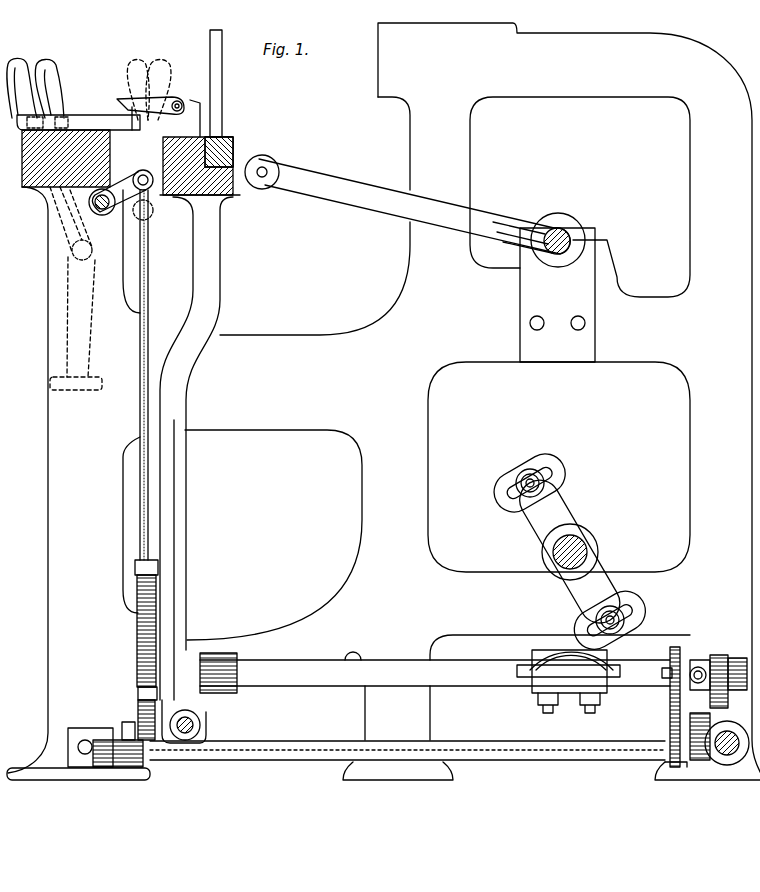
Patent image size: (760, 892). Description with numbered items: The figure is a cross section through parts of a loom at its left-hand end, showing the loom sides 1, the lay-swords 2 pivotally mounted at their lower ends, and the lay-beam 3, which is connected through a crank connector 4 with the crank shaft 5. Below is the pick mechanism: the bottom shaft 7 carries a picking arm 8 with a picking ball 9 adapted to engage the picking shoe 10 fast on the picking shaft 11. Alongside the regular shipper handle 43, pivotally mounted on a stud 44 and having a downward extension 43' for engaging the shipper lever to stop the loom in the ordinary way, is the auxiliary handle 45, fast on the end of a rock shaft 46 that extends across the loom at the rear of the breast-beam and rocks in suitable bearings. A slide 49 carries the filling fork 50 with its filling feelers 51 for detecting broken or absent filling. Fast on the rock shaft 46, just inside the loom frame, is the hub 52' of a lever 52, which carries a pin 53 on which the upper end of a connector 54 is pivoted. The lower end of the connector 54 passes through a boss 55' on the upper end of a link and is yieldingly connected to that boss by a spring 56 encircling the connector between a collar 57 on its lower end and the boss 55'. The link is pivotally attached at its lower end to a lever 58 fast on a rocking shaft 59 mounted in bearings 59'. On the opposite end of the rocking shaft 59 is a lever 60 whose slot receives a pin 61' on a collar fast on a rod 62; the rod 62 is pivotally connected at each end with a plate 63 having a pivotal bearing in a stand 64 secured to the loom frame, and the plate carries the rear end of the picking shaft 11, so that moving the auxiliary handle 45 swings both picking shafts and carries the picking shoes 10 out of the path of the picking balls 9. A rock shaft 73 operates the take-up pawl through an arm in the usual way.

The loom sides 1 is at (63, 515).
The lay-swords 2 is at (208, 308).
The lay-beam 3 is at (207, 167).
The crank connector 4 is at (353, 198).
The crank shaft 5 is at (568, 228).
The bottom shaft 7 is at (585, 543).
The picking arm 8 is at (535, 525).
The picking ball 9 is at (510, 465).
The picking shoe 10 is at (547, 677).
The picking shaft 11 is at (362, 680).
The regular shipper handle 43 is at (41, 73).
The downward extension 43' is at (56, 323).
The stud 44 is at (67, 257).
The auxiliary handle 45 is at (48, 87).
The rock shaft 46 is at (63, 225).
The slide 49 is at (62, 116).
The filling fork 50 is at (192, 98).
The filling feelers 51 is at (200, 130).
The lever 52 is at (87, 175).
The hub 52' is at (61, 219).
The pin 53 is at (147, 183).
The connector 54 is at (143, 317).
The boss 55' is at (119, 584).
The spring 56 is at (137, 623).
The collar 57 is at (140, 690).
The lever 58 is at (125, 728).
The rocking shaft 59 is at (407, 741).
The bearings 59' is at (399, 740).
The lever 60 is at (677, 712).
The pin 61' is at (644, 690).
The rod 62 is at (697, 660).
The plate 63 is at (717, 658).
The stand 64 is at (728, 665).
The rock shaft 73 is at (198, 723).